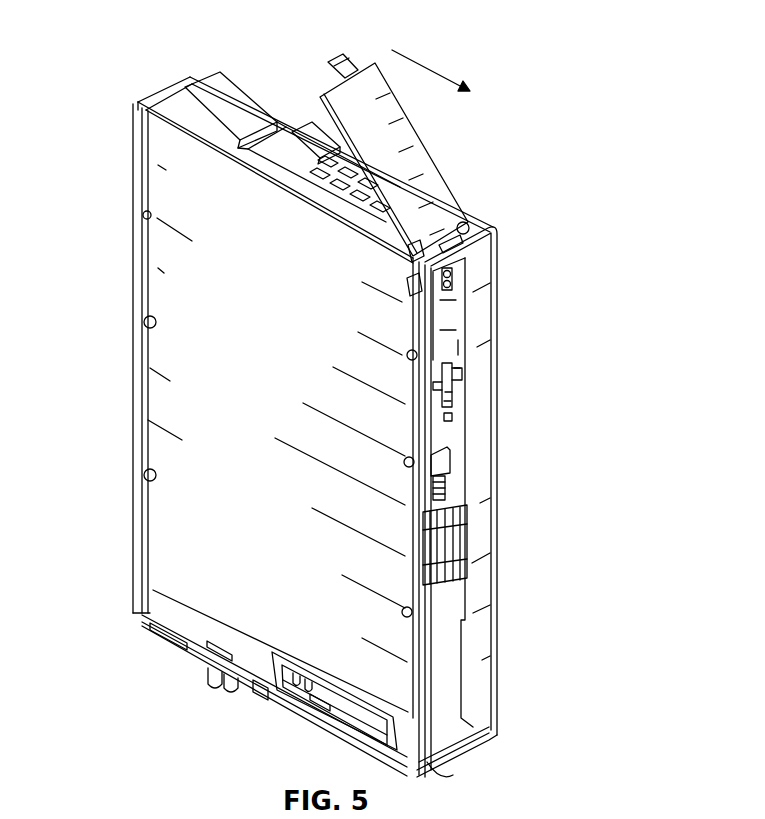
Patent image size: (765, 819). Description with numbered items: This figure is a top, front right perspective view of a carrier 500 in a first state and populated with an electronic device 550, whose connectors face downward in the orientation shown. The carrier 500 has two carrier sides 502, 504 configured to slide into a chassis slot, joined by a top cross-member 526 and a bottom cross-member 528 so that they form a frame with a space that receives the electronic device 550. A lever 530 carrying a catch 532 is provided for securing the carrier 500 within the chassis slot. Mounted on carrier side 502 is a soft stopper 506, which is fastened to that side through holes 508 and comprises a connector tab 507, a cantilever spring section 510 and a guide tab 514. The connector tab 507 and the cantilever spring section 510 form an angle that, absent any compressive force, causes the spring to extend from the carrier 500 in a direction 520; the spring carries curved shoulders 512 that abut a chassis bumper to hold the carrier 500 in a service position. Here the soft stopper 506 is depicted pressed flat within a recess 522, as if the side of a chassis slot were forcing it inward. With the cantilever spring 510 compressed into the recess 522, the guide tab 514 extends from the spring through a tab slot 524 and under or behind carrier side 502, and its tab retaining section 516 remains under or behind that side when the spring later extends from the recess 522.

The carrier 500 is at (160, 86).
The carrier side 502 is at (453, 488).
The carrier side 504 is at (138, 140).
The soft stopper 506 is at (448, 312).
The connector tab 507 is at (457, 278).
The holes 508 is at (462, 272).
The cantilever spring section 510 is at (455, 347).
The curved shoulders 512 is at (435, 385).
The guide tab 514 is at (453, 392).
The tab retaining section 516 is at (452, 417).
The direction 520 is at (432, 70).
The recess 522 is at (458, 370).
The tab slot 524 is at (450, 401).
The top cross-member 526 is at (227, 93).
The bottom cross-member 528 is at (187, 648).
The lever 530 is at (415, 158).
The catch 532 is at (263, 172).
The electronic device 550 is at (291, 291).